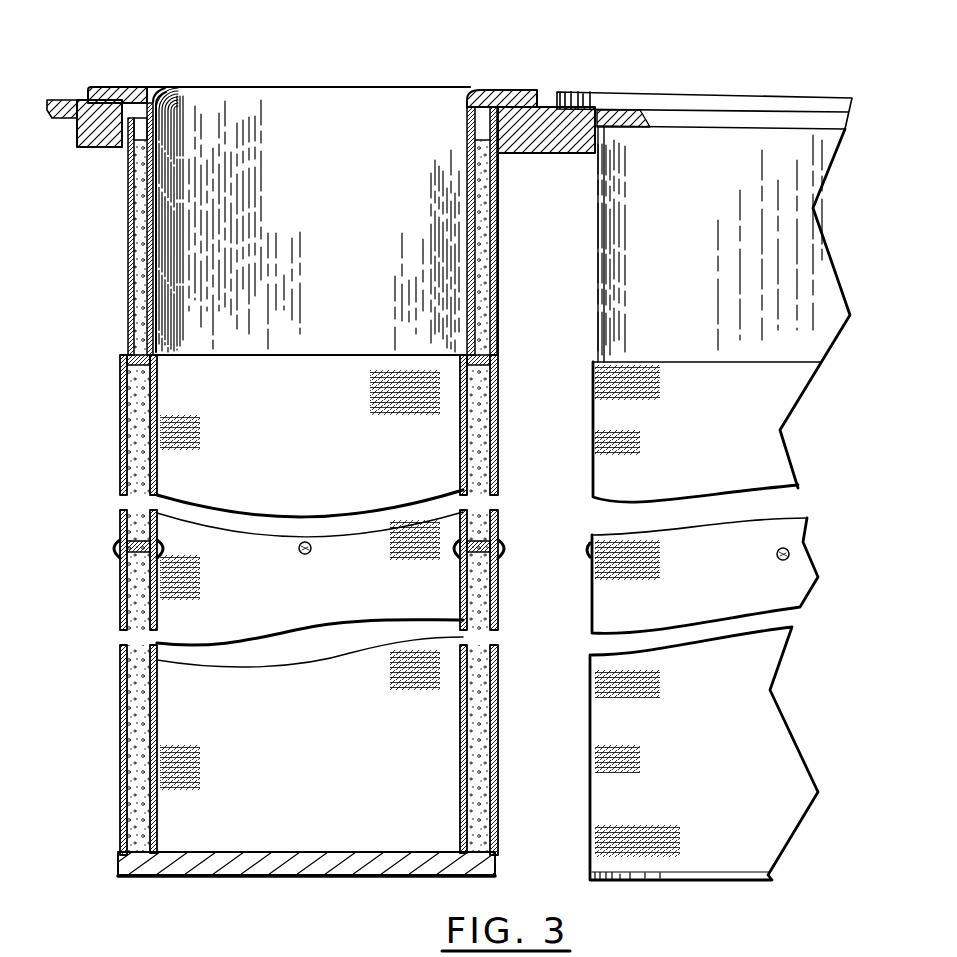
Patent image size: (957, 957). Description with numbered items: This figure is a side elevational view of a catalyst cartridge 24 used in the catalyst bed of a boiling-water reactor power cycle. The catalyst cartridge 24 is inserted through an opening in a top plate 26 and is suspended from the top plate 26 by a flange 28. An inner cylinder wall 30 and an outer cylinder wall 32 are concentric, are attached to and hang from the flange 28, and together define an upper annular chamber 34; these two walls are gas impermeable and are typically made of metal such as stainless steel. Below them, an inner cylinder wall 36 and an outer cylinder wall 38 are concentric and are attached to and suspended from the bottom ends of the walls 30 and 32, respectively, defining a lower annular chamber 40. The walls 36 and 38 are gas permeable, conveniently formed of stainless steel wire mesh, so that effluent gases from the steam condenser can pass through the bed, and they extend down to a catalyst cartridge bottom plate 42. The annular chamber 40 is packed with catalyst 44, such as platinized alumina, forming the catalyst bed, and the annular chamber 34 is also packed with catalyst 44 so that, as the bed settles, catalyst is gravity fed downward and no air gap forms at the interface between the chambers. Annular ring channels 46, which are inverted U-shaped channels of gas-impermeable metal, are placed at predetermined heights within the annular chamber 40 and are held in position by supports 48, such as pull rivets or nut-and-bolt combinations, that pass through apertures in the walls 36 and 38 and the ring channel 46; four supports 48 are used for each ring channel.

The catalyst cartridge 24 is at (400, 80).
The top plate 26 is at (105, 148).
The flange 28 is at (505, 90).
The inner cylinder wall 30 is at (147, 234).
The outer cylinder wall 32 is at (500, 293).
The annular chamber 34 is at (137, 279).
The inner cylinder wall 36 is at (128, 404).
The outer cylinder wall 38 is at (500, 402).
The annular chamber 40 is at (130, 442).
The catalyst cartridge bottom plate 42 is at (303, 878).
The catalyst 44 is at (126, 672).
The annular ring channel 46 is at (487, 533).
The support 48 is at (305, 554).